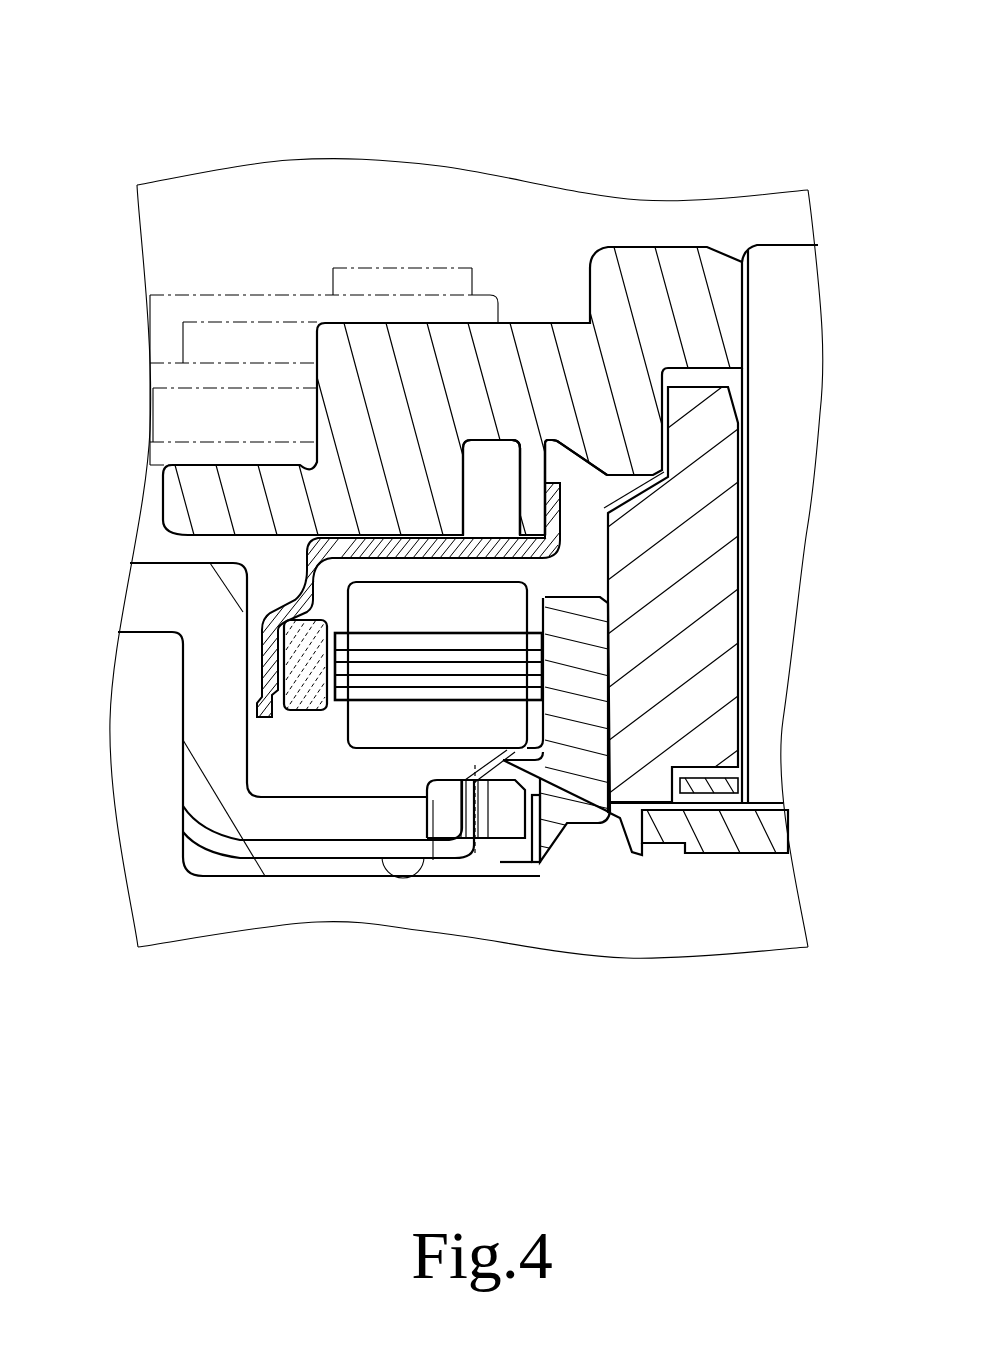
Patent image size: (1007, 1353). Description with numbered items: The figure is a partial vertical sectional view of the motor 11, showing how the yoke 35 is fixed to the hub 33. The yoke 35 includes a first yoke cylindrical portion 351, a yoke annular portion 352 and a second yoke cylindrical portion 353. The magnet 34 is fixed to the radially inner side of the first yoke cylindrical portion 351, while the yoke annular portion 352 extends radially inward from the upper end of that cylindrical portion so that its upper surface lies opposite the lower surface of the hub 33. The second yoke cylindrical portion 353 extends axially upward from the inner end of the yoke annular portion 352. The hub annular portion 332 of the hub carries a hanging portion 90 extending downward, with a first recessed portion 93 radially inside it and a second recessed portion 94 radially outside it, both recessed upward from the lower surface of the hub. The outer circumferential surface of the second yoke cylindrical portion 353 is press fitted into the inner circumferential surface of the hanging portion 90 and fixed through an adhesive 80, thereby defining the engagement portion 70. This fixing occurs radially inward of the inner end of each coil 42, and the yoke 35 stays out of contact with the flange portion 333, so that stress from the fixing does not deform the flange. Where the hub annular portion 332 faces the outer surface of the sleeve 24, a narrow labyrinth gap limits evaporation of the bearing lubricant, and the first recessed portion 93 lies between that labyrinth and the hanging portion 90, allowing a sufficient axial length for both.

The motor 11 is at (351, 114).
The sleeve 24 is at (707, 493).
The hub 33 is at (430, 455).
The hub annular portion 332 is at (383, 413).
The flange portion 333 is at (290, 497).
The magnet 34 is at (300, 663).
The yoke 35 is at (408, 808).
The first yoke cylindrical portion 351 is at (267, 683).
The yoke annular portion 352 is at (390, 550).
The second yoke cylindrical portion 353 is at (547, 552).
The coil 42 is at (440, 610).
The engagement portion 70 is at (680, 789).
The adhesive 80 is at (715, 815).
The hanging portion 90 is at (533, 480).
The first recessed portion 93 is at (557, 463).
The second recessed portion 94 is at (492, 463).